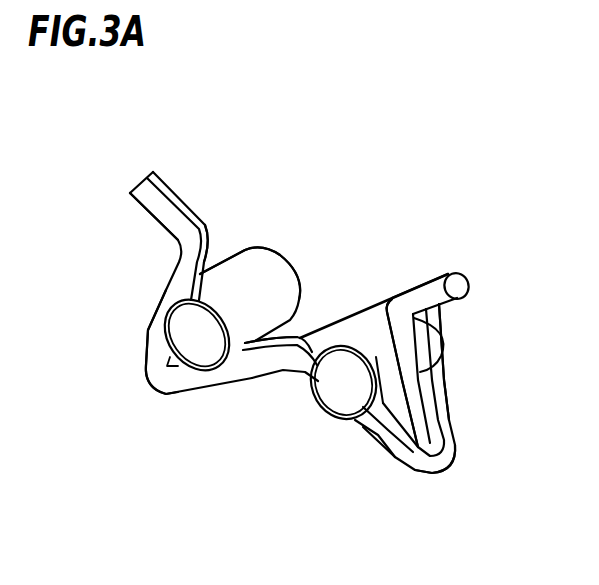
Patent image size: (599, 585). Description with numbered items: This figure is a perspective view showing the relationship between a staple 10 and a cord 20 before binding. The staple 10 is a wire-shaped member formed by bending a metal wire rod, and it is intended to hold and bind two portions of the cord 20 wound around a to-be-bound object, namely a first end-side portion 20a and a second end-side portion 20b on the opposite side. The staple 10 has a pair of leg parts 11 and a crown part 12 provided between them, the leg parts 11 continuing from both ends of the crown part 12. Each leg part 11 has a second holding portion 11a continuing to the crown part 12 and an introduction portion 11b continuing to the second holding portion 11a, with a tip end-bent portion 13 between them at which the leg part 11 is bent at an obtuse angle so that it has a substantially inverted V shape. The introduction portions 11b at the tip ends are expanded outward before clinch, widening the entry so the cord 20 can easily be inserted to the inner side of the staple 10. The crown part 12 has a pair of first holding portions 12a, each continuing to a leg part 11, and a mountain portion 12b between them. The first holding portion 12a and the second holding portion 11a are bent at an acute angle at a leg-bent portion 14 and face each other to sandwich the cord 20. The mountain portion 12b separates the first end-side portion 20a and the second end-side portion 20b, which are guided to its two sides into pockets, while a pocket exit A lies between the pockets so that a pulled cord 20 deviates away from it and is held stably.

The staple 10 is at (449, 415).
The leg part 11 is at (168, 273).
The second holding portion 11a is at (153, 315).
The introduction portion 11b is at (175, 180).
The crown part 12 is at (212, 387).
The first holding portion 12a is at (262, 380).
The mountain portion 12b is at (298, 332).
The tip end-bent portion 13 is at (218, 230).
The leg-bent portion 14 is at (153, 385).
The cord 20 is at (280, 250).
The first end-side portion 20a is at (238, 313).
The second end-side portion 20b is at (378, 416).
The pocket exit A is at (346, 226).